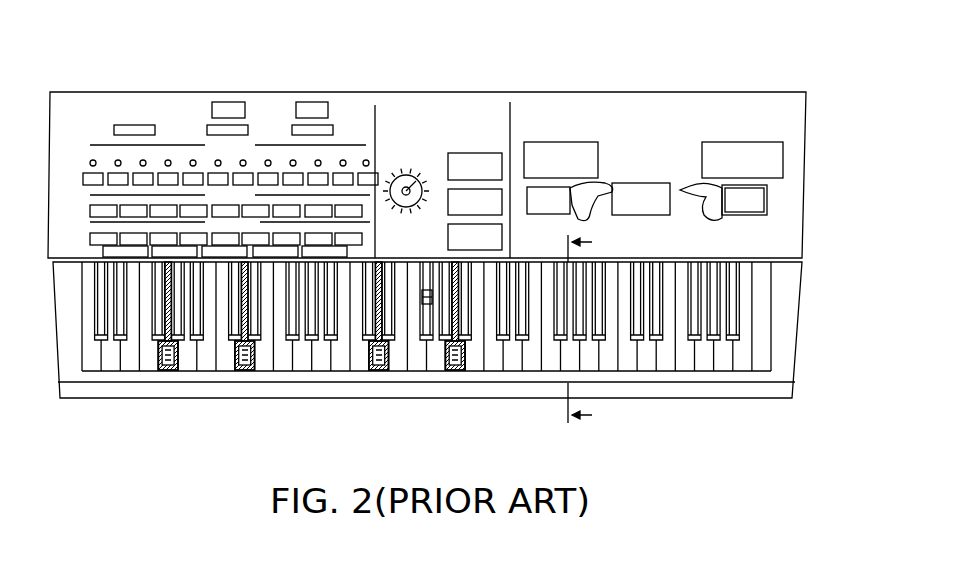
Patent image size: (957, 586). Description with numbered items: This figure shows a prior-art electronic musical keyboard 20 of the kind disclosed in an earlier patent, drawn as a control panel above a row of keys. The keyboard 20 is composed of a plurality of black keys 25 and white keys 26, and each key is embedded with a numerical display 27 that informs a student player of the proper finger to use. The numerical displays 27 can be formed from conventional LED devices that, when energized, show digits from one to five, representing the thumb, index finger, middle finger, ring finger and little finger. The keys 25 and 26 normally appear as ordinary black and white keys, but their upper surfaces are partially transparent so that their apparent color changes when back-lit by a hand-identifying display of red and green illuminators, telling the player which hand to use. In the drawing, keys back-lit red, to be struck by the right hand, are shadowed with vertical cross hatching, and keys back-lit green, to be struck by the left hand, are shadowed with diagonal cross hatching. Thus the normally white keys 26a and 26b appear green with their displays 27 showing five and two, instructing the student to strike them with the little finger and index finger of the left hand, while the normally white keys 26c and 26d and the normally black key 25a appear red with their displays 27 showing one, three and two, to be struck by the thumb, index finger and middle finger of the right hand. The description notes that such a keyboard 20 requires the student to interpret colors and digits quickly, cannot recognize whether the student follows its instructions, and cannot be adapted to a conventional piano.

The electronic musical keyboard 20 is at (96, 72).
The black keys 25 is at (316, 320).
The black key 25a is at (425, 362).
The white keys 26 is at (111, 365).
The white key 26a is at (172, 371).
The white key 26b is at (250, 371).
The white key 26c is at (382, 371).
The white key 26d is at (462, 371).
The numerical display 27 is at (163, 371).